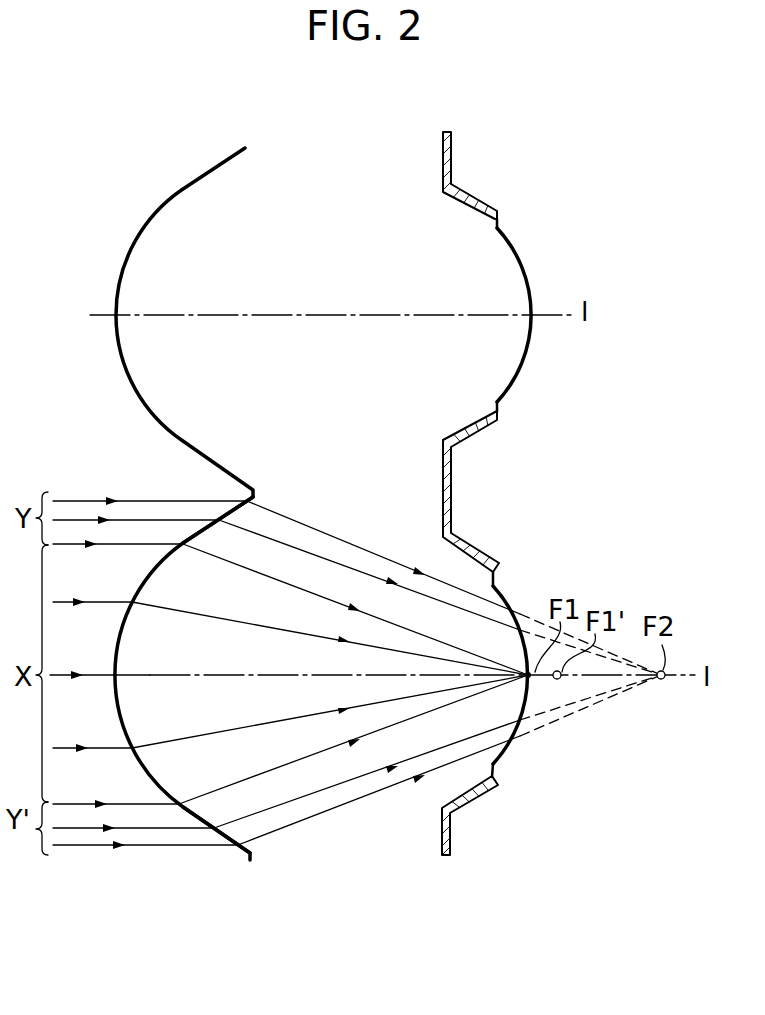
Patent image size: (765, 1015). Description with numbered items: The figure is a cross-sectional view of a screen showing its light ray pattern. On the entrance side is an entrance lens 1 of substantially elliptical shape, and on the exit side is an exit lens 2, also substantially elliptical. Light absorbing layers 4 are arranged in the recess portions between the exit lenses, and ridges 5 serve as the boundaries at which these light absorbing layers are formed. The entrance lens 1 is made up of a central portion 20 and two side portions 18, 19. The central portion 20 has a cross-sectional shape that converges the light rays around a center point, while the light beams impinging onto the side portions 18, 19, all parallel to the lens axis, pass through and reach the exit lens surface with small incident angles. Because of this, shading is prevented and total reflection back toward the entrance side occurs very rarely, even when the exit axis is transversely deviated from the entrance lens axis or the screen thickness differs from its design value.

The entrance lens 1 is at (164, 205).
The exit lens 2 is at (527, 355).
The light absorbing layer 4 is at (453, 455).
The ridge 5 is at (496, 418).
The side portion 18 is at (200, 531).
The side portion 19 is at (222, 836).
The central portion 20 is at (116, 640).